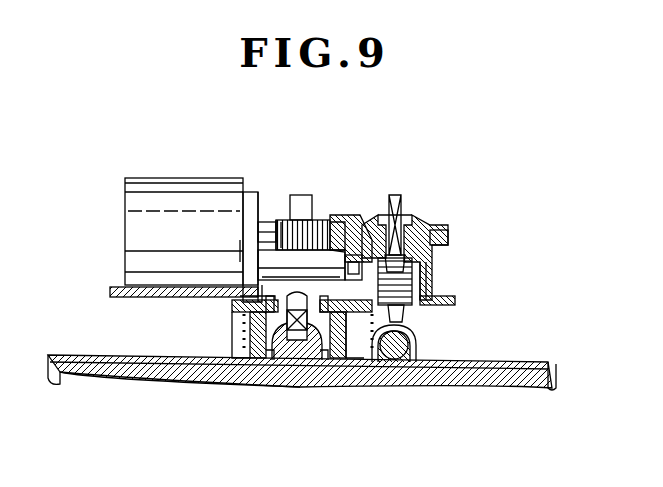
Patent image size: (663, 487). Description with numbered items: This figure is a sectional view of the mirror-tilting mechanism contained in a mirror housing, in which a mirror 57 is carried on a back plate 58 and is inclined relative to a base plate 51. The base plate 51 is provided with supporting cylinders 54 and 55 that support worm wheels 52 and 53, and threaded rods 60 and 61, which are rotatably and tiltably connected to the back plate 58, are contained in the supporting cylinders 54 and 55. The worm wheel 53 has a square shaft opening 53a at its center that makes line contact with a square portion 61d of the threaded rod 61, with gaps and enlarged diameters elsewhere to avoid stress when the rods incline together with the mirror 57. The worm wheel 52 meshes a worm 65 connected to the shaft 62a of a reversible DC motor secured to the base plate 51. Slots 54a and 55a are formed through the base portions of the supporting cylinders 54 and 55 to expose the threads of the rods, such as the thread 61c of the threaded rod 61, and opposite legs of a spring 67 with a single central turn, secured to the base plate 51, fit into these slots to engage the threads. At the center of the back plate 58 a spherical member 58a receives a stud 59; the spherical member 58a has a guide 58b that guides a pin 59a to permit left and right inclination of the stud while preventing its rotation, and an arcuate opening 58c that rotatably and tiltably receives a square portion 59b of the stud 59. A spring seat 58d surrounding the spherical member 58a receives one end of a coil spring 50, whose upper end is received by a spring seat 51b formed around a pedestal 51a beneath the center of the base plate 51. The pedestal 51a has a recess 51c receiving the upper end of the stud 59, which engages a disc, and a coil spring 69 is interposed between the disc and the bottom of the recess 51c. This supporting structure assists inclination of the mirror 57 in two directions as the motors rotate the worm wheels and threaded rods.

The coil spring 50 is at (200, 376).
The base plate 51 is at (112, 287).
The pedestal 51a is at (240, 306).
The spring seat 51b is at (396, 310).
The recess 51c is at (244, 281).
The worm wheel 52 is at (318, 222).
The worm wheel 53 is at (440, 230).
The square shaft opening 53a is at (412, 220).
The supporting cylinder 54 is at (280, 262).
The slot 54a is at (262, 224).
The supporting cylinder 55 is at (432, 256).
The slot 55a is at (420, 282).
The mirror 57 is at (60, 376).
The back plate 58 is at (349, 258).
The spherical member 58a is at (280, 382).
The guide 58b is at (252, 366).
The arcuate opening 58c is at (335, 370).
The spring seat 58d is at (225, 385).
The stud 59 is at (298, 380).
The pin 59a is at (270, 366).
The square portion 59b is at (268, 316).
The threaded rod 60 is at (300, 195).
The threaded rod 61 is at (395, 195).
The thread 61c is at (455, 302).
The square portion 61d is at (448, 238).
The motor shaft 62a is at (270, 226).
The worm 65 is at (316, 222).
The spring 67 is at (356, 250).
The coil spring 69 is at (242, 246).